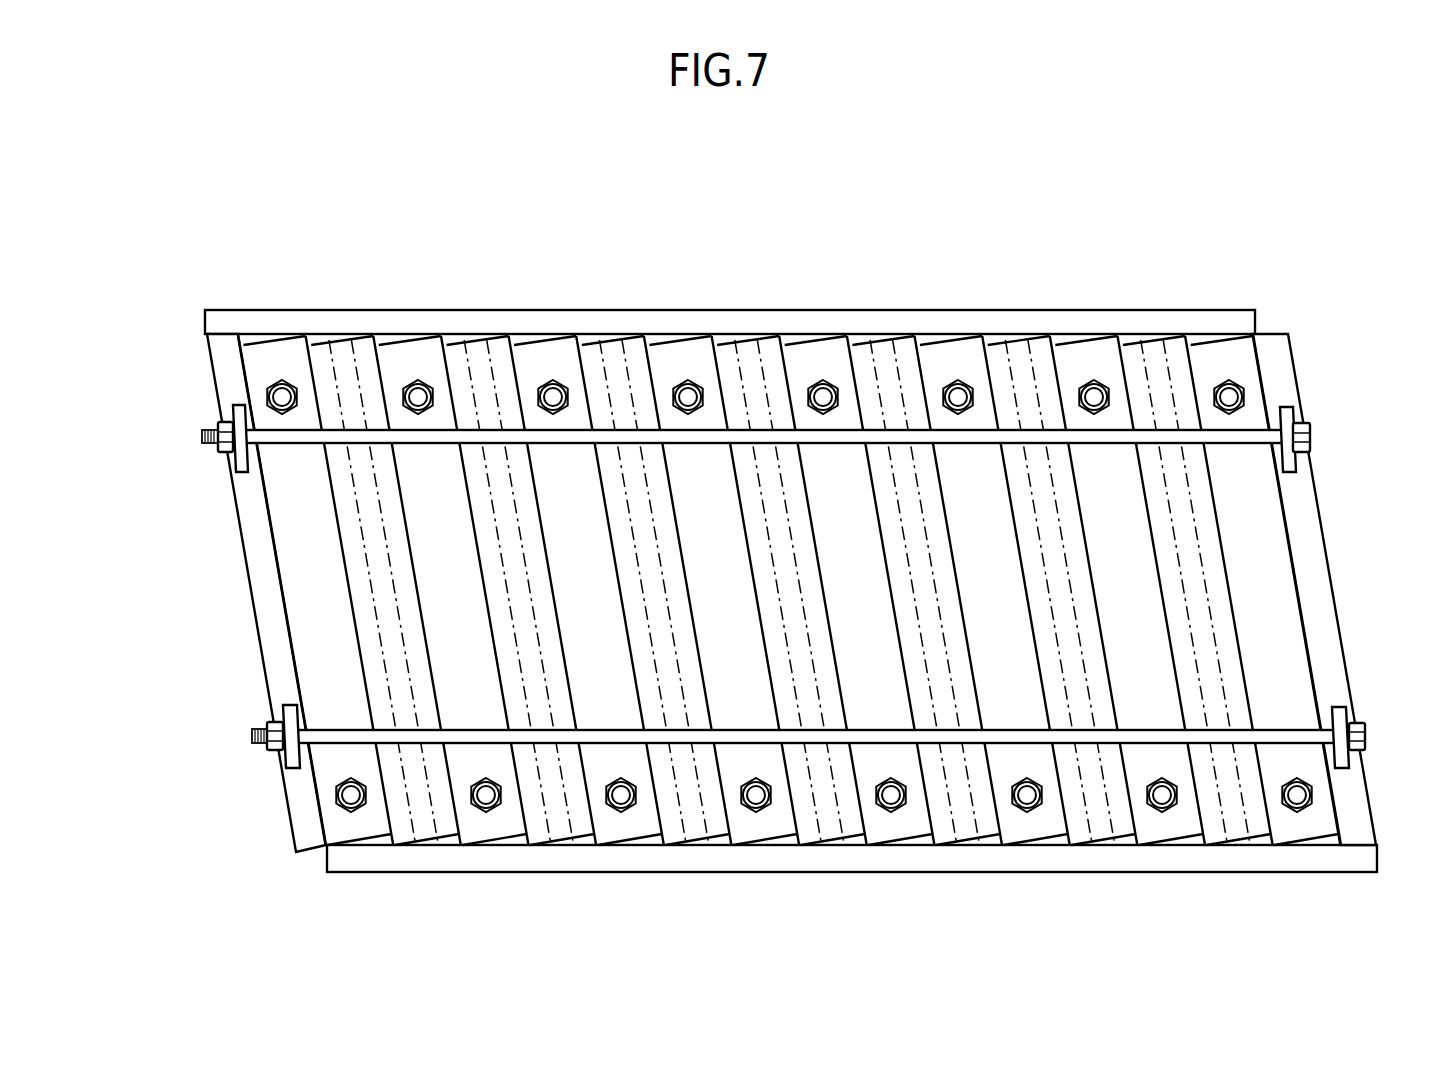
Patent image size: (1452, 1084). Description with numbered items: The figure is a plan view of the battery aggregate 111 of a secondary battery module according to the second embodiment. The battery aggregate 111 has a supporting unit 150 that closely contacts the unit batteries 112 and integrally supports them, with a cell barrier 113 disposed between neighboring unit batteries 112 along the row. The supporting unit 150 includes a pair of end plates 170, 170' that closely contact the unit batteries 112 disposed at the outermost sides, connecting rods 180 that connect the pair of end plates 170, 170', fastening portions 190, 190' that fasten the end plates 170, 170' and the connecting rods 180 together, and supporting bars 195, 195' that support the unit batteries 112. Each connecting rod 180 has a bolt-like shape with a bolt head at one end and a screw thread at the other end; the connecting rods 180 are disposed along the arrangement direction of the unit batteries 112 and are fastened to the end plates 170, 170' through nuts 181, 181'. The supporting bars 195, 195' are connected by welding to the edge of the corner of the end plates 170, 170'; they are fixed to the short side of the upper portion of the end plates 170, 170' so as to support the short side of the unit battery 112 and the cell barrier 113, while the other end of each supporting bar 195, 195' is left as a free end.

The battery aggregate 111 is at (752, 224).
The supporting unit 150 is at (176, 503).
The unit battery 112 is at (768, 826).
The cell barrier 113 is at (840, 828).
The end plate 170 is at (238, 593).
The end plate 170' is at (1343, 589).
The connecting rod 180 is at (965, 437).
The nut 181 is at (181, 445).
The nut 181' is at (219, 719).
The fastening portion 190 is at (185, 432).
The fastening portion 190' is at (818, 605).
The supporting bar 195 is at (730, 277).
The supporting bar 195' is at (852, 907).